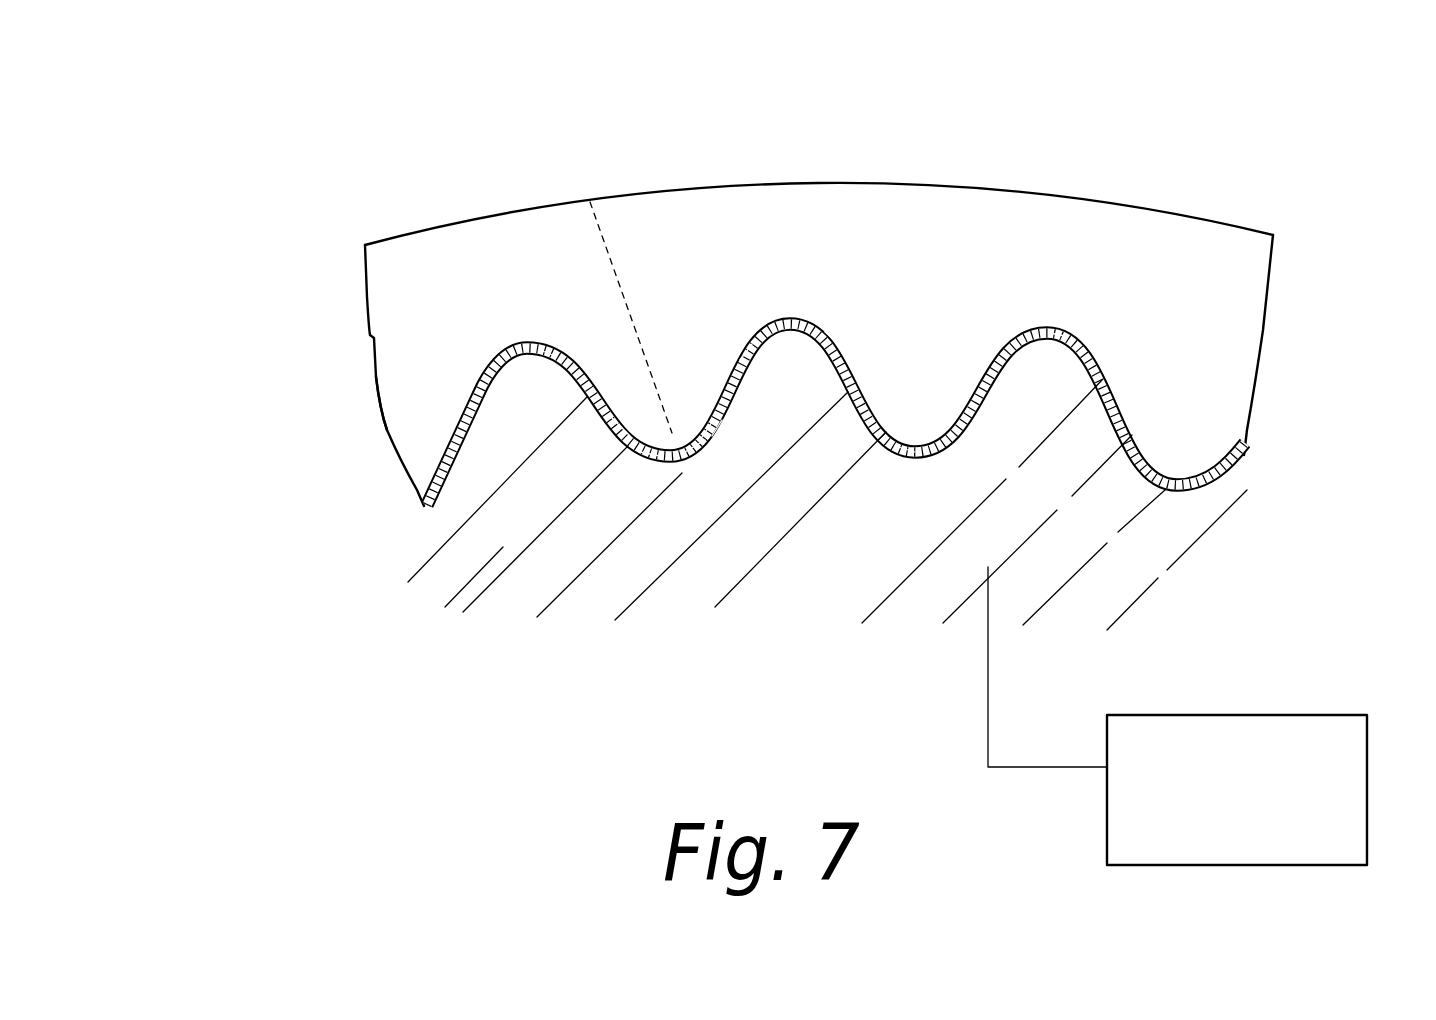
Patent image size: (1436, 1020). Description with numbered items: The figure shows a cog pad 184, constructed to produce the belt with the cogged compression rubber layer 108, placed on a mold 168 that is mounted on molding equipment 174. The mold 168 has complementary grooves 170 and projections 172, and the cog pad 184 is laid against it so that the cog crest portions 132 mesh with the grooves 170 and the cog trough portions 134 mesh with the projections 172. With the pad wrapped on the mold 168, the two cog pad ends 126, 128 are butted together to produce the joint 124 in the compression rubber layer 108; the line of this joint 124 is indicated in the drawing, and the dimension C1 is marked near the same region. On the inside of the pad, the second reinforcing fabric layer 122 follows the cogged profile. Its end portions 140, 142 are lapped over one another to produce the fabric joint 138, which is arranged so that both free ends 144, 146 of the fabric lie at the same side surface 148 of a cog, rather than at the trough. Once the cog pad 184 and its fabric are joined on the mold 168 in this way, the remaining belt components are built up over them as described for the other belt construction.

The compression rubber layer 108 is at (943, 273).
The second reinforcing fabric layer 122 is at (1133, 440).
The joint 124 is at (589, 200).
The end 126 is at (547, 373).
The end 128 is at (612, 255).
The clearance C1 is at (690, 303).
The crest portions 132 is at (622, 422).
The trough portions 134 is at (820, 228).
The joint 138 is at (697, 462).
The end portion 140 is at (697, 415).
The end portion 142 is at (713, 447).
The free end 144 is at (652, 444).
The free end 146 is at (830, 335).
The side surface 148 is at (745, 385).
The mold 168 is at (1007, 457).
The grooves 170 is at (900, 440).
The projections 172 is at (820, 582).
The molding equipment 174 is at (1263, 851).
The cog pad 184 is at (375, 383).